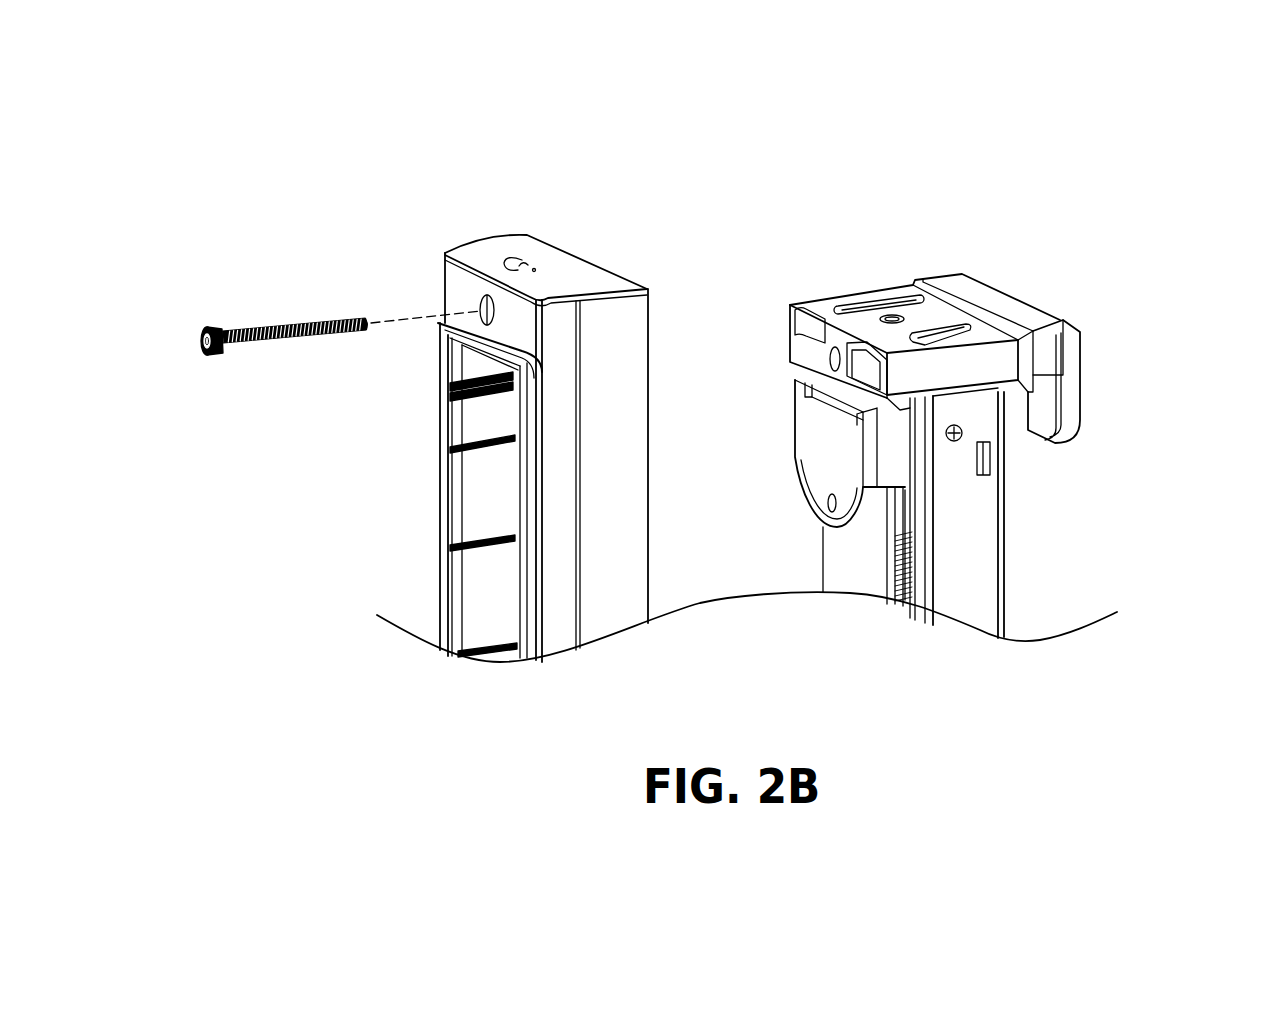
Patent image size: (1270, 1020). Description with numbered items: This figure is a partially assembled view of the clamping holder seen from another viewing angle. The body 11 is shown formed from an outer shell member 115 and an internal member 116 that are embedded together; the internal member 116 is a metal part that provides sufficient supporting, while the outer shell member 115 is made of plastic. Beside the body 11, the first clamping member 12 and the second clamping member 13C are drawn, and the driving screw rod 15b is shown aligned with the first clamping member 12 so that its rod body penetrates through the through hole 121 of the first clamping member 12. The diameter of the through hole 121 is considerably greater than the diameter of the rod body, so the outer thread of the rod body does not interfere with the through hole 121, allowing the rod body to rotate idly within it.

The body 11 is at (272, 67).
The outer shell member 115 is at (515, 245).
The internal member 116 is at (1063, 542).
The driving screw rod 15b is at (287, 322).
The first clamping member 12 is at (1008, 307).
The through hole 121 is at (830, 357).
The second clamping member 13C is at (1073, 383).